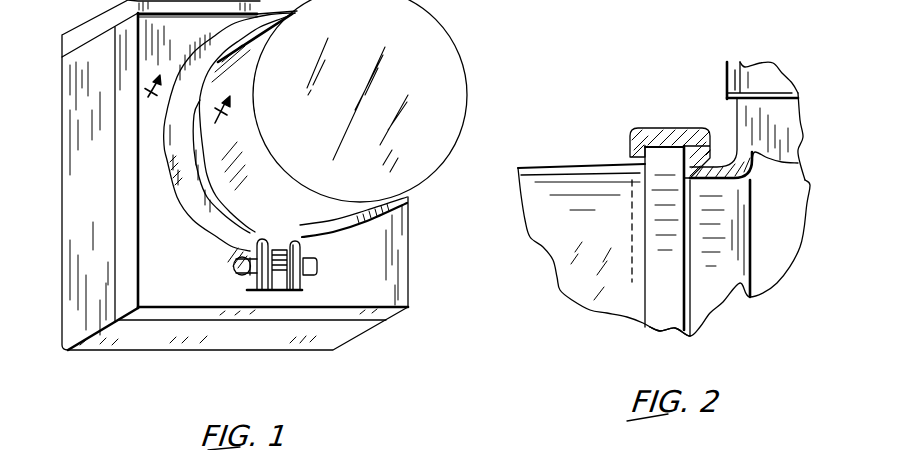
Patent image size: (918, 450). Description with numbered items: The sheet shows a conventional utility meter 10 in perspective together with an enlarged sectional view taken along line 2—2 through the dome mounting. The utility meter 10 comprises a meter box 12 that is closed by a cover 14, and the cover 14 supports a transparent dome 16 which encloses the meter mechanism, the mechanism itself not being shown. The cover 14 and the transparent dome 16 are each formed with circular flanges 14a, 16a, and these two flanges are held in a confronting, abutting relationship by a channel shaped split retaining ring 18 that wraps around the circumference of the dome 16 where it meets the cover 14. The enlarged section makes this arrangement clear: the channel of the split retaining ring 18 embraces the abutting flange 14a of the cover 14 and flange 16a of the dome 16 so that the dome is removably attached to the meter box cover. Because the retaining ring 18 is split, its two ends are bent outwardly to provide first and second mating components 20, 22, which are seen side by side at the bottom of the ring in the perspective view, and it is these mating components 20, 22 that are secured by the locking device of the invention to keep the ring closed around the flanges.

In FIG. 1, the section line 2— 2 is at (186, 110).
In FIG. 1, the utility meter 10 is at (468, 54).
In FIG. 1, the meter box 12 is at (82, 237).
In FIG. 1, the cover 14 is at (398, 283).
In FIG. 2, the cover 14 is at (793, 128).
In FIG. 2, the circular flange of cover 14a is at (697, 128).
In FIG. 1, the transparent dome 16 is at (420, 171).
In FIG. 2, the transparent dome 16 is at (563, 297).
In FIG. 2, the circular flange of dome 16a is at (658, 171).
In FIG. 1, the split retaining ring 18 is at (191, 226).
In FIG. 2, the split retaining ring 18 is at (657, 128).
In FIG. 1, the first mating component 20 is at (245, 282).
In FIG. 1, the second mating component 22 is at (303, 283).